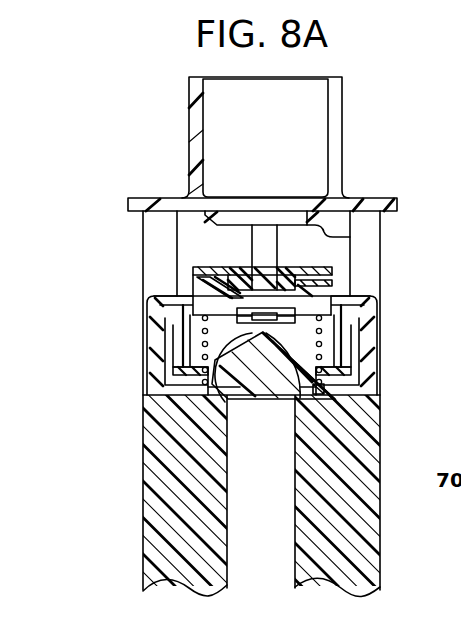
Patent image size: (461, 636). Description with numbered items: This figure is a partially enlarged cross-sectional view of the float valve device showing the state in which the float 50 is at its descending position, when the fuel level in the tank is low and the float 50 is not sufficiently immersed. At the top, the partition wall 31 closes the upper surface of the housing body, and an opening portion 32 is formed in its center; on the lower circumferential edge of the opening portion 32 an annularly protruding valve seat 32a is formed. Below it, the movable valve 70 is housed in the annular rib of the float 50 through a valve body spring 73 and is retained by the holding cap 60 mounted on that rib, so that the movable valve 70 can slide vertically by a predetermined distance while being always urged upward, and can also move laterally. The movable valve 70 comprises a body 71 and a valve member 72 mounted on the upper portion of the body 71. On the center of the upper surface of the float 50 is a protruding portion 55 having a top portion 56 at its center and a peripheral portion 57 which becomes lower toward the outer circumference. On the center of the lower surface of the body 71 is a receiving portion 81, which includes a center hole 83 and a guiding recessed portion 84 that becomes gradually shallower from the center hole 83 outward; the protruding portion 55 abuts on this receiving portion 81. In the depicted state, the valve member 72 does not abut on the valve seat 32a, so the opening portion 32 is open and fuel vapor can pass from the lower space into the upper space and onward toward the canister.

The partition wall 31 is at (169, 196).
The opening portion 32 is at (263, 206).
The valve seat 32a is at (320, 237).
The movable valve 70 is at (97, 153).
The valve member 72 is at (215, 268).
The body 71 is at (200, 288).
The holding cap 60 is at (152, 301).
The valve body spring 73 is at (190, 352).
The protruding portion 55 is at (97, 380).
The peripheral portion 57 is at (215, 397).
The top portion 56 is at (230, 398).
The guiding recessed portion 84 is at (268, 334).
The receiving portion 81 is at (293, 329).
The center hole 83 is at (322, 391).
The float 50 is at (162, 538).